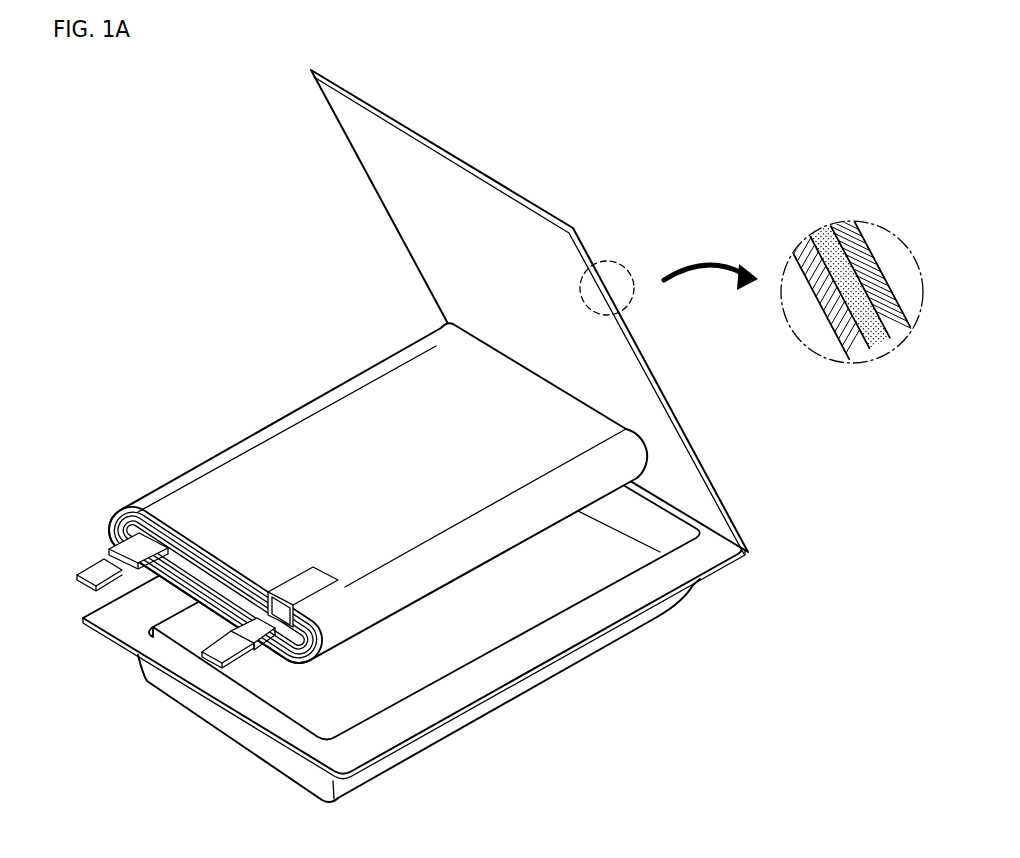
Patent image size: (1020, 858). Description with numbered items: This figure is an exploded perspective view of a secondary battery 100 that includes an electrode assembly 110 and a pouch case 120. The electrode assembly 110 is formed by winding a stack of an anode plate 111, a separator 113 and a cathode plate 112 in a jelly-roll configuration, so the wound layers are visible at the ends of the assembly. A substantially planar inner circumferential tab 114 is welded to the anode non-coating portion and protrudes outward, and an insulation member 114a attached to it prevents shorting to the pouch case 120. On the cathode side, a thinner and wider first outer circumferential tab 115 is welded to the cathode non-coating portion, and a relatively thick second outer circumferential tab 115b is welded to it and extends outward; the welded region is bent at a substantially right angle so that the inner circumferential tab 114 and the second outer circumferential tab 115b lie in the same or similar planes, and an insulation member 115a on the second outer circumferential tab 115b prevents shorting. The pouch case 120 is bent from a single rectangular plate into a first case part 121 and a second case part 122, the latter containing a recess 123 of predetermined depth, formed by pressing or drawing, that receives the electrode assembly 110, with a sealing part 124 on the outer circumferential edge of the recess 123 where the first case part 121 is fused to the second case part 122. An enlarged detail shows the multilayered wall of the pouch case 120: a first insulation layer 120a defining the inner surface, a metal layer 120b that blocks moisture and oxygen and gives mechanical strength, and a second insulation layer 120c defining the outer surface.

The secondary battery 100 is at (143, 207).
The electrode assembly 110 is at (205, 397).
The anode plate 111 is at (112, 536).
The cathode plate 112 is at (117, 504).
The separator 113 is at (113, 517).
The inner circumferential tab 114 is at (78, 577).
The insulation member 114a is at (100, 548).
The first outer circumferential tab 115 is at (330, 592).
The insulation member 115a is at (262, 643).
The second outer circumferential tab 115b is at (205, 655).
The pouch case 120 is at (832, 497).
The first insulation layer 120a is at (805, 247).
The metal layer 120b is at (820, 240).
The second insulation layer 120c is at (841, 229).
The first case part 121 is at (732, 506).
The second case part 122 is at (730, 571).
The recess 123 is at (468, 650).
The sealing part 124 is at (583, 622).